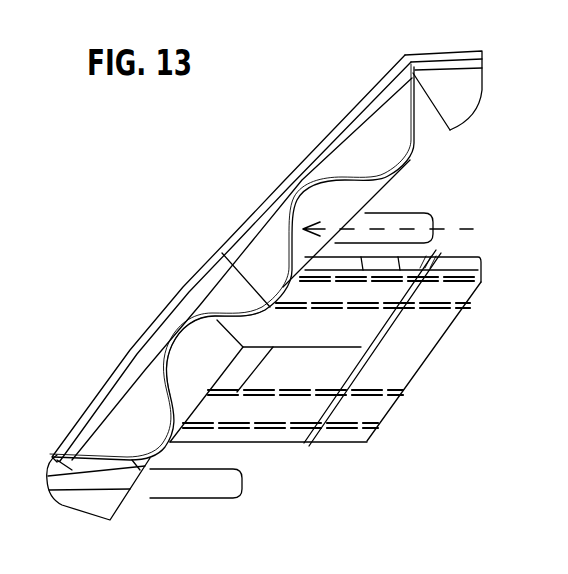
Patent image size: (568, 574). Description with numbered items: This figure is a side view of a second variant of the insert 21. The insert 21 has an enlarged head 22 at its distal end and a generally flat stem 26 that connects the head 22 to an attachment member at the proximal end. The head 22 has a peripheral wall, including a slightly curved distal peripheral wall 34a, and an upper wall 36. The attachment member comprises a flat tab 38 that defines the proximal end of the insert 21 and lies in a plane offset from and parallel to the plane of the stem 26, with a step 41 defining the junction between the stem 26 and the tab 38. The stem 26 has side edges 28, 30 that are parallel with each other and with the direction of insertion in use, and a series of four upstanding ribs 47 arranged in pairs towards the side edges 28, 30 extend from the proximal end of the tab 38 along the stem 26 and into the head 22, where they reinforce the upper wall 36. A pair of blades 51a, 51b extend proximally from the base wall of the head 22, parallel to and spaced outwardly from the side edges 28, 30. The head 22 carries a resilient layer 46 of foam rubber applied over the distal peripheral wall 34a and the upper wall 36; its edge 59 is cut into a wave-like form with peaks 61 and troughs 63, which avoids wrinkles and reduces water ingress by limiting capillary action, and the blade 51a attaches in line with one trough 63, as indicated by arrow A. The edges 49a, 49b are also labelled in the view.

The insert 21 is at (158, 201).
The head 22 is at (448, 89).
The stem 26 is at (262, 432).
The side edge 28 is at (424, 263).
The side edge 30 is at (280, 445).
The distal peripheral wall 34a is at (270, 182).
The upper wall 36 is at (88, 475).
The tab 38 is at (457, 267).
The step 41 is at (300, 445).
The resilient layer 46 is at (117, 417).
The ribs 47 is at (372, 438).
The upper edge 49a is at (238, 220).
The lower edge 49b is at (377, 430).
The blade 51a is at (414, 220).
The blade 51b is at (217, 487).
The edge 59 is at (417, 128).
The peaks 61 is at (163, 444).
The troughs 63 is at (173, 337).